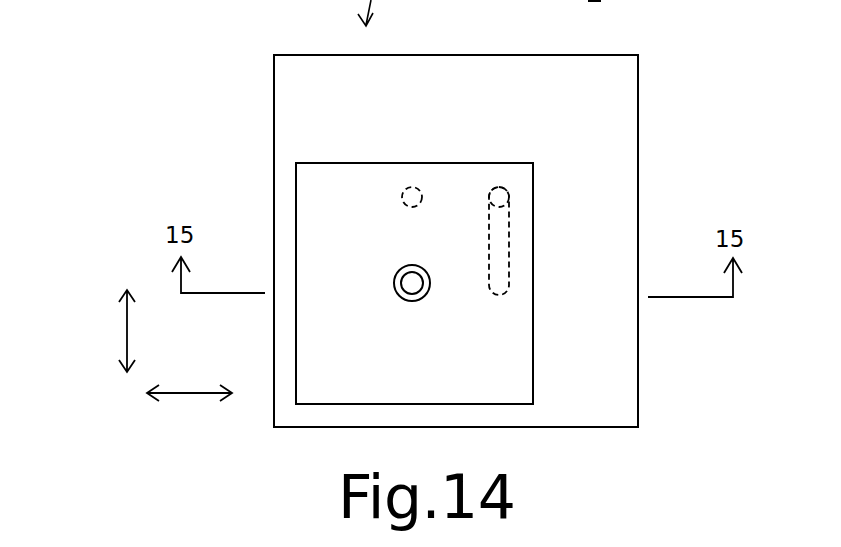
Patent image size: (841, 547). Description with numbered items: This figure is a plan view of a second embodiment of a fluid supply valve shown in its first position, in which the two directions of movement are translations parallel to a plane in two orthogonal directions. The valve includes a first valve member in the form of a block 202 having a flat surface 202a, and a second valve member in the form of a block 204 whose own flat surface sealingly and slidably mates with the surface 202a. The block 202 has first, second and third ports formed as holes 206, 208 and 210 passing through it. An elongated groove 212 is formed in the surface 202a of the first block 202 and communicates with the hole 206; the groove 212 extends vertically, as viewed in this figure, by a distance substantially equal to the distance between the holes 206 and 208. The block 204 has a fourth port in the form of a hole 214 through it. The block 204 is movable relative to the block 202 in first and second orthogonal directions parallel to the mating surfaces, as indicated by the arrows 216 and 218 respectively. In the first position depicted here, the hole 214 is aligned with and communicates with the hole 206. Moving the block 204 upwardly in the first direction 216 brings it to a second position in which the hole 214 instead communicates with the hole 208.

The block 202 is at (638, 118).
The flat surface 202a is at (302, 92).
The block 204 is at (296, 193).
The hole 206 is at (412, 301).
The hole 208 is at (420, 186).
The hole 210 is at (509, 192).
The elongated groove 212 is at (503, 251).
The hole 214 is at (395, 283).
The arrow 216 is at (127, 330).
The arrow 218 is at (196, 394).